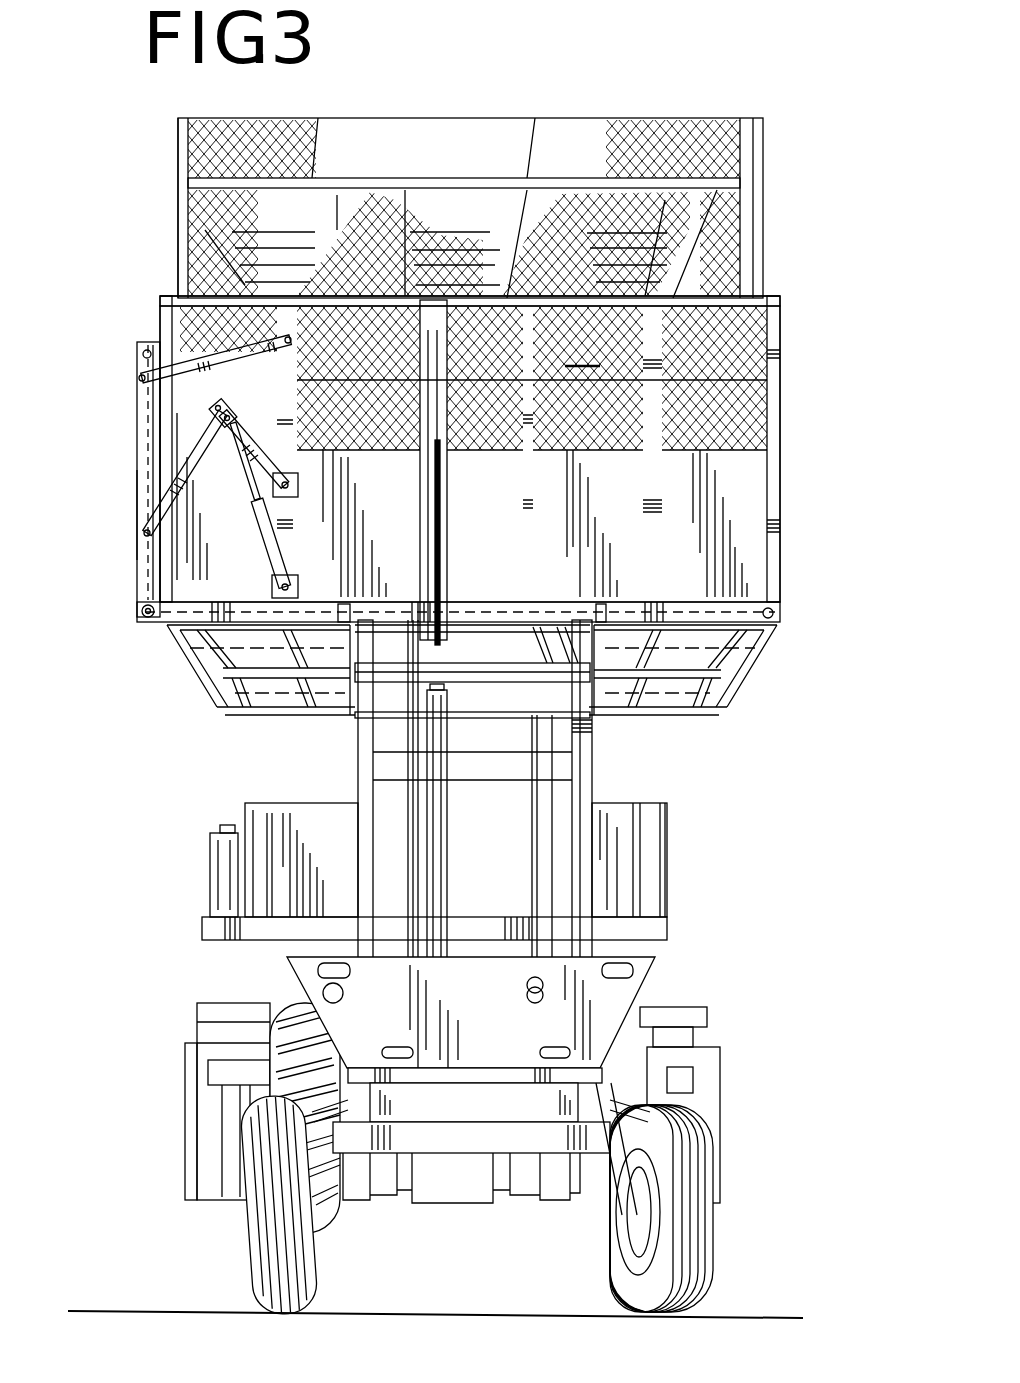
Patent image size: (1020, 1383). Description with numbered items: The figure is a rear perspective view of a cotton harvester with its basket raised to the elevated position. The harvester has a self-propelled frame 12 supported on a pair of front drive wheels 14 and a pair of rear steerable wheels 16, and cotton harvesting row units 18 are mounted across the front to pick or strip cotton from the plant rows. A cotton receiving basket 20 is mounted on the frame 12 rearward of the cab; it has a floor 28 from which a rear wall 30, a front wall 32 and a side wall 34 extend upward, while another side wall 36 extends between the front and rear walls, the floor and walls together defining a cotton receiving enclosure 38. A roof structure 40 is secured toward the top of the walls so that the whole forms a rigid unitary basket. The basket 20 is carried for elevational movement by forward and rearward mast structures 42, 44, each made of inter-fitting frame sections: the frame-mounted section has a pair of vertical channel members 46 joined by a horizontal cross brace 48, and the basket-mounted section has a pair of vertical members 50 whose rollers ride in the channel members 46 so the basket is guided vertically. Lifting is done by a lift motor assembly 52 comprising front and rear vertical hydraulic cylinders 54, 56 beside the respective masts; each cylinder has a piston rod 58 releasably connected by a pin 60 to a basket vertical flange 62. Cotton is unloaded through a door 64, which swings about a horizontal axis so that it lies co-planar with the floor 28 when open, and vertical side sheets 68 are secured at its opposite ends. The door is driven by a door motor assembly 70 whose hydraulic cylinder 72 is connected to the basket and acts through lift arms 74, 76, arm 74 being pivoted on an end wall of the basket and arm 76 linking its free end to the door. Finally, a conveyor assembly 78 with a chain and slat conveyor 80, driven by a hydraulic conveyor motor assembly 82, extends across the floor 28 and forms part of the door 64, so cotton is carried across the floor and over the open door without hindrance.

The self-propelled frame 12 is at (640, 980).
The front drive wheels 14 is at (278, 1003).
The rear steerable wheels 16 is at (700, 1250).
The cotton harvesting row units 18 is at (205, 1195).
The cotton receiving basket 20 is at (792, 281).
The floor 28 is at (640, 695).
The rear wall 30 is at (458, 459).
The front wall 32 is at (285, 715).
The side wall 34 is at (780, 436).
The side wall 36 is at (180, 232).
The cotton receiving enclosure 38 is at (160, 318).
The roof structure 40 is at (648, 118).
The forward mast structure 42 is at (590, 745).
The rearward mast structure 44 is at (552, 762).
The vertical channel members 46 is at (363, 887).
The horizontal cross brace 48 is at (488, 680).
The vertical members 50 is at (343, 612).
The lift motor assembly 52 is at (463, 862).
The hydraulic cylinder 54 is at (417, 785).
The hydraulic cylinder 56 is at (440, 773).
The piston rod 58 is at (443, 612).
The pin 60 is at (420, 316).
The basket vertical flange 62 is at (430, 500).
The door 64 is at (137, 500).
The vertical side sheets 68 is at (150, 612).
The door motor assembly 70 is at (242, 521).
The hydraulic cylinder 72 is at (272, 580).
The lift arm 74 is at (250, 420).
The lift arm 76 is at (215, 478).
The conveyor assembly 78 is at (132, 457).
The chain and slat conveyor 80 is at (220, 697).
The hydraulic conveyor motor assembly 82 is at (774, 614).